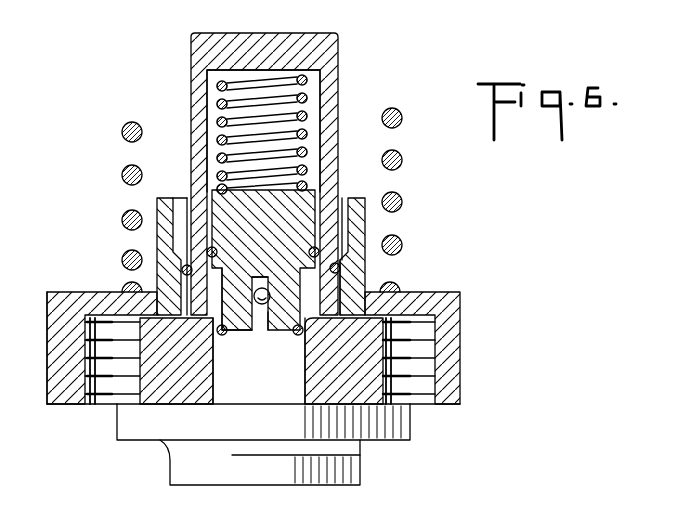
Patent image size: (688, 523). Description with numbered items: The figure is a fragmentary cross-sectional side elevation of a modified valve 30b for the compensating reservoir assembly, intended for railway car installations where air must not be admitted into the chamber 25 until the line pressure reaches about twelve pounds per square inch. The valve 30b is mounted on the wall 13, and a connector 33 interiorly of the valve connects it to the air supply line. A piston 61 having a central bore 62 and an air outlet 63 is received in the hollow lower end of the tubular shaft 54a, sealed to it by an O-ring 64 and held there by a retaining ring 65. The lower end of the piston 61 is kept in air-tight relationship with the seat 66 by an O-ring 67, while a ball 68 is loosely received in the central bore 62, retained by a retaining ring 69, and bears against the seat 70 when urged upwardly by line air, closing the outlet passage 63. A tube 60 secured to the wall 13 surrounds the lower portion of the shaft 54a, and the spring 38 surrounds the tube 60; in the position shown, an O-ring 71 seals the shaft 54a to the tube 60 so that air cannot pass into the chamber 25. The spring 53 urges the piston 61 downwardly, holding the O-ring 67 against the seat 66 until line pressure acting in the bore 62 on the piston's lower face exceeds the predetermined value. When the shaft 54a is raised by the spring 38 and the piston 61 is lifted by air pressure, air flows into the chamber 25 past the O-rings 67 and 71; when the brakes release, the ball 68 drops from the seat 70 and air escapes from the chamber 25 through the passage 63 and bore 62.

The chamber 25 is at (101, 77).
The spring 38 is at (122, 129).
The valve 30b is at (97, 209).
The tube 60 is at (160, 233).
The tubular shaft 54a is at (335, 58).
The spring 53 is at (307, 96).
The piston 61 is at (322, 195).
The O-ring 64 is at (216, 250).
The air outlet 63 is at (274, 263).
The O-ring 71 is at (341, 268).
The retaining ring 65 is at (362, 276).
The seat 66 is at (373, 320).
The O-ring 67 is at (208, 338).
The ball 68 is at (262, 305).
The seat 70 is at (290, 343).
The retaining ring 69 is at (275, 356).
The central bore 62 is at (263, 366).
The wall 13 is at (55, 404).
The connector 33 is at (134, 430).